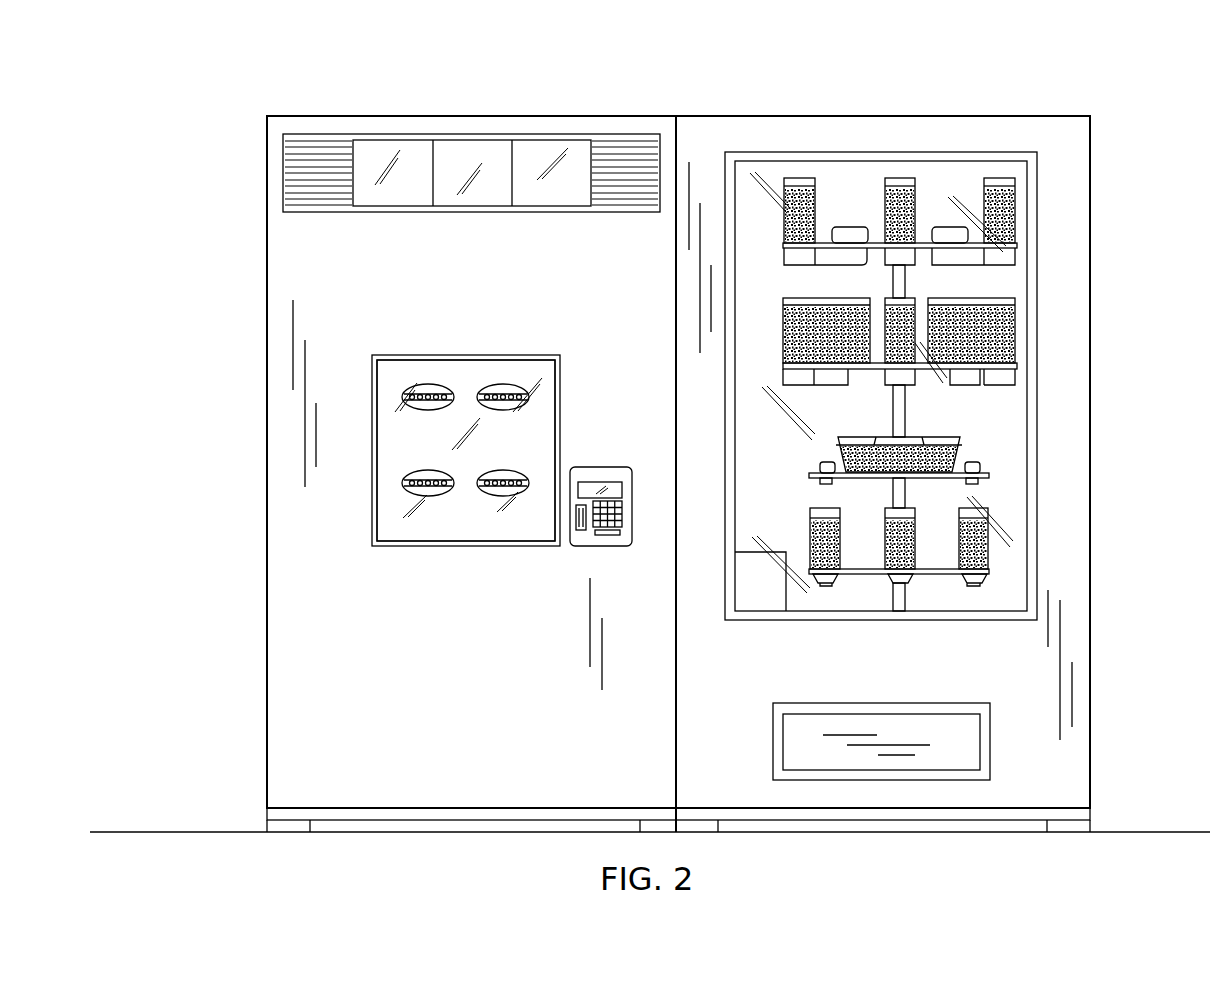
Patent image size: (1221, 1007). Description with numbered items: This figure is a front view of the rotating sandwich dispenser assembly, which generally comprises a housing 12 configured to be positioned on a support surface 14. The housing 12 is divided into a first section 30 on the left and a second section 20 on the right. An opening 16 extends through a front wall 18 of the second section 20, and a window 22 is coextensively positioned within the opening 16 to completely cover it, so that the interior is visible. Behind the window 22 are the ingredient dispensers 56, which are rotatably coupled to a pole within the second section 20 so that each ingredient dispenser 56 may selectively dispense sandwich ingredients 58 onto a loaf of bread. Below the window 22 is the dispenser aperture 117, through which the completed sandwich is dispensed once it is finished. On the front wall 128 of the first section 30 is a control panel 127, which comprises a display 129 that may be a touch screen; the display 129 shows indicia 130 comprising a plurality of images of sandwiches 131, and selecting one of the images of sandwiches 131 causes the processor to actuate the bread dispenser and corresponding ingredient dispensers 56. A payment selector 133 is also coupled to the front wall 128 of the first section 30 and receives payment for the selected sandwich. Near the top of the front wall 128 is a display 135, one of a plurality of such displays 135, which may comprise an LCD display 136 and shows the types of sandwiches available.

The housing 12 is at (462, 86).
The support surface 14 is at (1195, 832).
The opening 16 is at (1030, 208).
The front wall 18 is at (749, 135).
The second section 20 is at (834, 101).
The window 22 is at (1010, 434).
The first section 30 is at (330, 106).
The ingredient dispenser 56 is at (985, 399).
The sandwich ingredients 58 is at (838, 318).
The dispenser aperture 117 is at (988, 750).
The control panel 127 is at (372, 372).
The front wall 128 is at (325, 628).
The display 129 is at (350, 462).
The indicia 130 is at (407, 367).
The images of sandwiches 131 is at (408, 496).
The payment selector 133 is at (600, 546).
The display 135 is at (395, 138).
The LCD display 136 is at (452, 234).